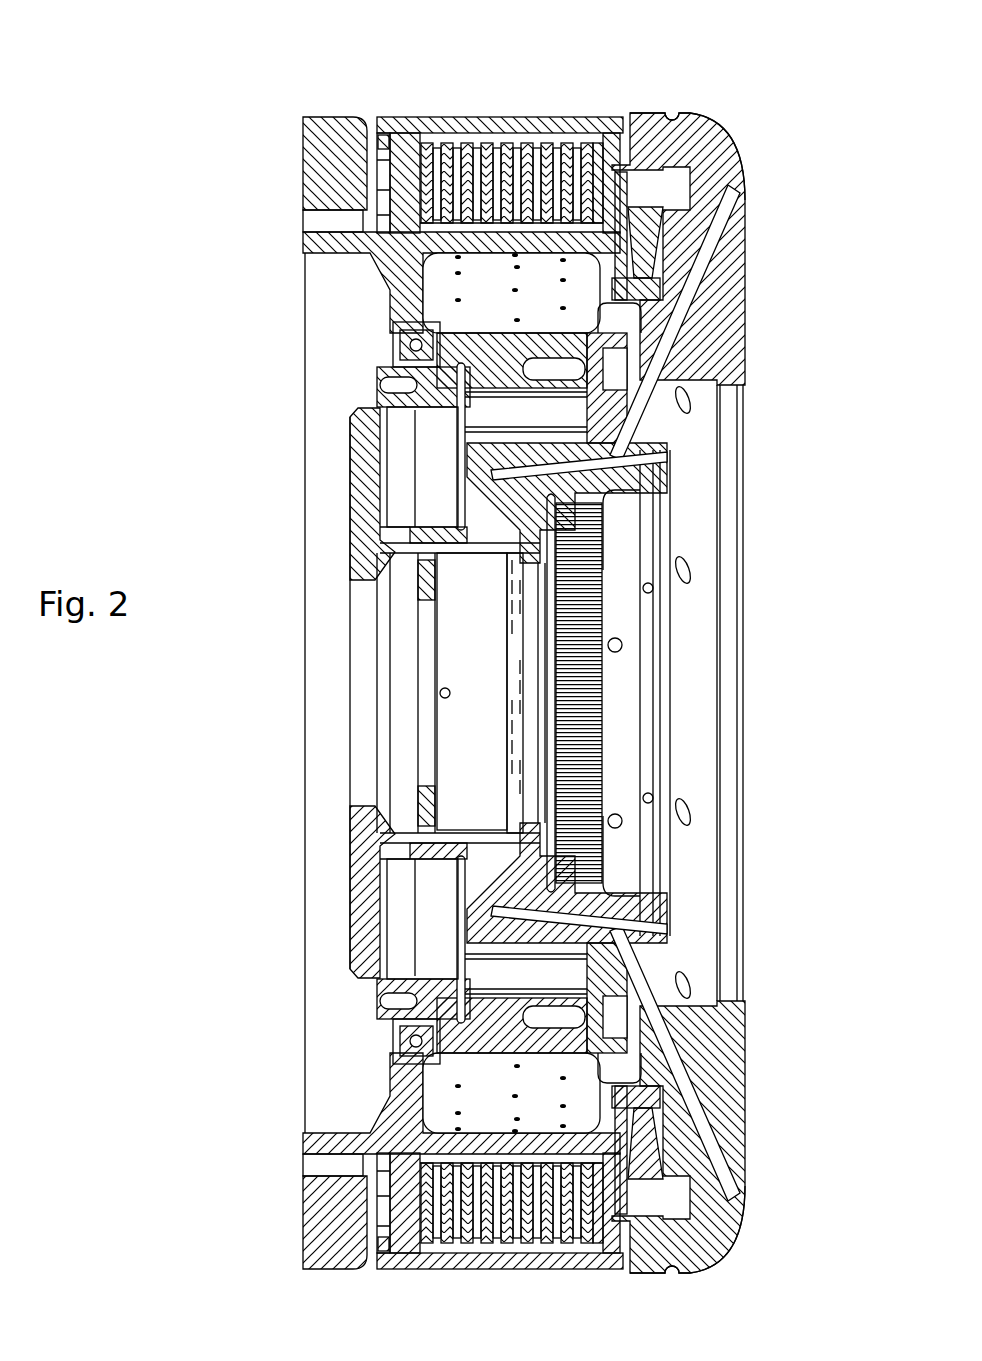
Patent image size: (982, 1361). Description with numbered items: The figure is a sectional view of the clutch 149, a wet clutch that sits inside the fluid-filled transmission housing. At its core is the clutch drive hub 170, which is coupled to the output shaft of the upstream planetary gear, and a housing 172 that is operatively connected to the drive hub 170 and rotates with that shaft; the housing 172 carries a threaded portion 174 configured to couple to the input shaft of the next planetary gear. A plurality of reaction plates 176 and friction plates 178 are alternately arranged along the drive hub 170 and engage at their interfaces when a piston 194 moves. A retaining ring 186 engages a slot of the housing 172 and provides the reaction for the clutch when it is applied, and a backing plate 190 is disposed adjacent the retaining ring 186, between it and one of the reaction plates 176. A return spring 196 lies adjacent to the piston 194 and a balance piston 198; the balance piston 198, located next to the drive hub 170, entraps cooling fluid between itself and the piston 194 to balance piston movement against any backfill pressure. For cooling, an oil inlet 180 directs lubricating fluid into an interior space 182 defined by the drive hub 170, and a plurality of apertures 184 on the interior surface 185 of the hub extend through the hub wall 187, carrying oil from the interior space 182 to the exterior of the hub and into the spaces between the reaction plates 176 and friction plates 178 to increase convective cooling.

The clutch 149 is at (275, 726).
The clutch drive hub 170 is at (300, 130).
The housing 172 is at (643, 113).
The threaded portion 174 is at (580, 723).
The reaction plates 176 is at (500, 130).
The friction plates 178 is at (440, 130).
The oil inlet 180 is at (613, 327).
The interior space 182 is at (470, 307).
The apertures 184 is at (460, 273).
The interior surface 185 is at (580, 290).
The retaining ring 186 is at (388, 120).
The hub wall 187 is at (570, 130).
The backing plate 190 is at (405, 113).
The piston 194 is at (703, 237).
The return spring 196 is at (607, 233).
The balance piston 198 is at (680, 165).